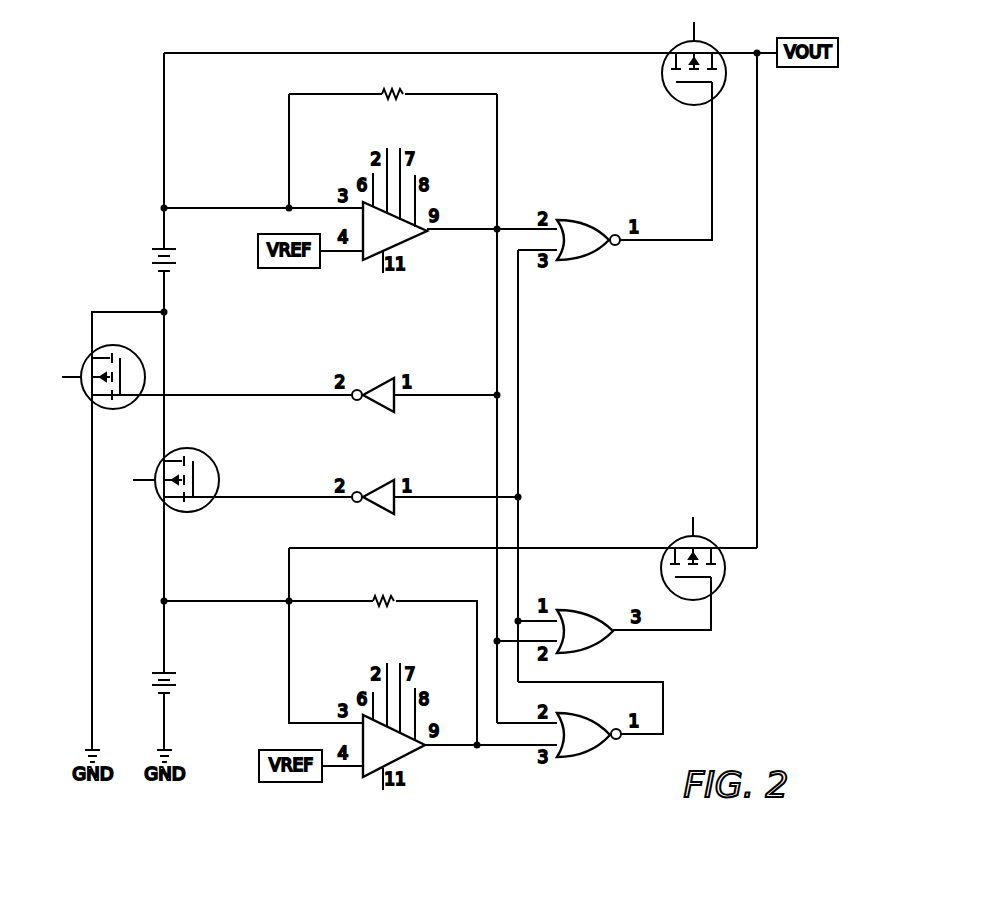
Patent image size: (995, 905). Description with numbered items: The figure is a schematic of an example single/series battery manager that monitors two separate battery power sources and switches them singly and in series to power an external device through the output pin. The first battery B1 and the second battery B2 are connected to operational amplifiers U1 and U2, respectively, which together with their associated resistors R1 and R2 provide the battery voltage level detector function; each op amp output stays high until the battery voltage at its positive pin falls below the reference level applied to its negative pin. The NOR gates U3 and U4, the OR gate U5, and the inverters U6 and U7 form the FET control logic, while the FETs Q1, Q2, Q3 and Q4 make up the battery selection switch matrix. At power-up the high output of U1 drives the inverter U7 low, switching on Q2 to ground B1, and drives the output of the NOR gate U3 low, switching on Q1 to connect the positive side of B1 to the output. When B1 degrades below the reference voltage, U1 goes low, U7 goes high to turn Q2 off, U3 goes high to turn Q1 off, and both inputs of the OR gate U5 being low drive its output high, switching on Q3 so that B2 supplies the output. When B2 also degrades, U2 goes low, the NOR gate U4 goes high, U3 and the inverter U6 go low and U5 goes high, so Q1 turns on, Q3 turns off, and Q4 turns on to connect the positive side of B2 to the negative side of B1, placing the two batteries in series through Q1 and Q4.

The FET Q1 is at (660, 75).
The FET Q2 is at (113, 409).
The FET Q3 is at (726, 570).
The FET Q4 is at (187, 512).
The operational amplifier U1 is at (410, 247).
The operational amplifier U2 is at (410, 760).
The NOR gate U3 is at (573, 218).
The NOR gate U4 is at (573, 760).
The OR gate U5 is at (573, 608).
The inverter U6 is at (378, 486).
The inverter U7 is at (378, 384).
The resistor R1 is at (393, 95).
The resistor R2 is at (384, 601).
The battery B1 is at (178, 260).
The battery B2 is at (178, 681).